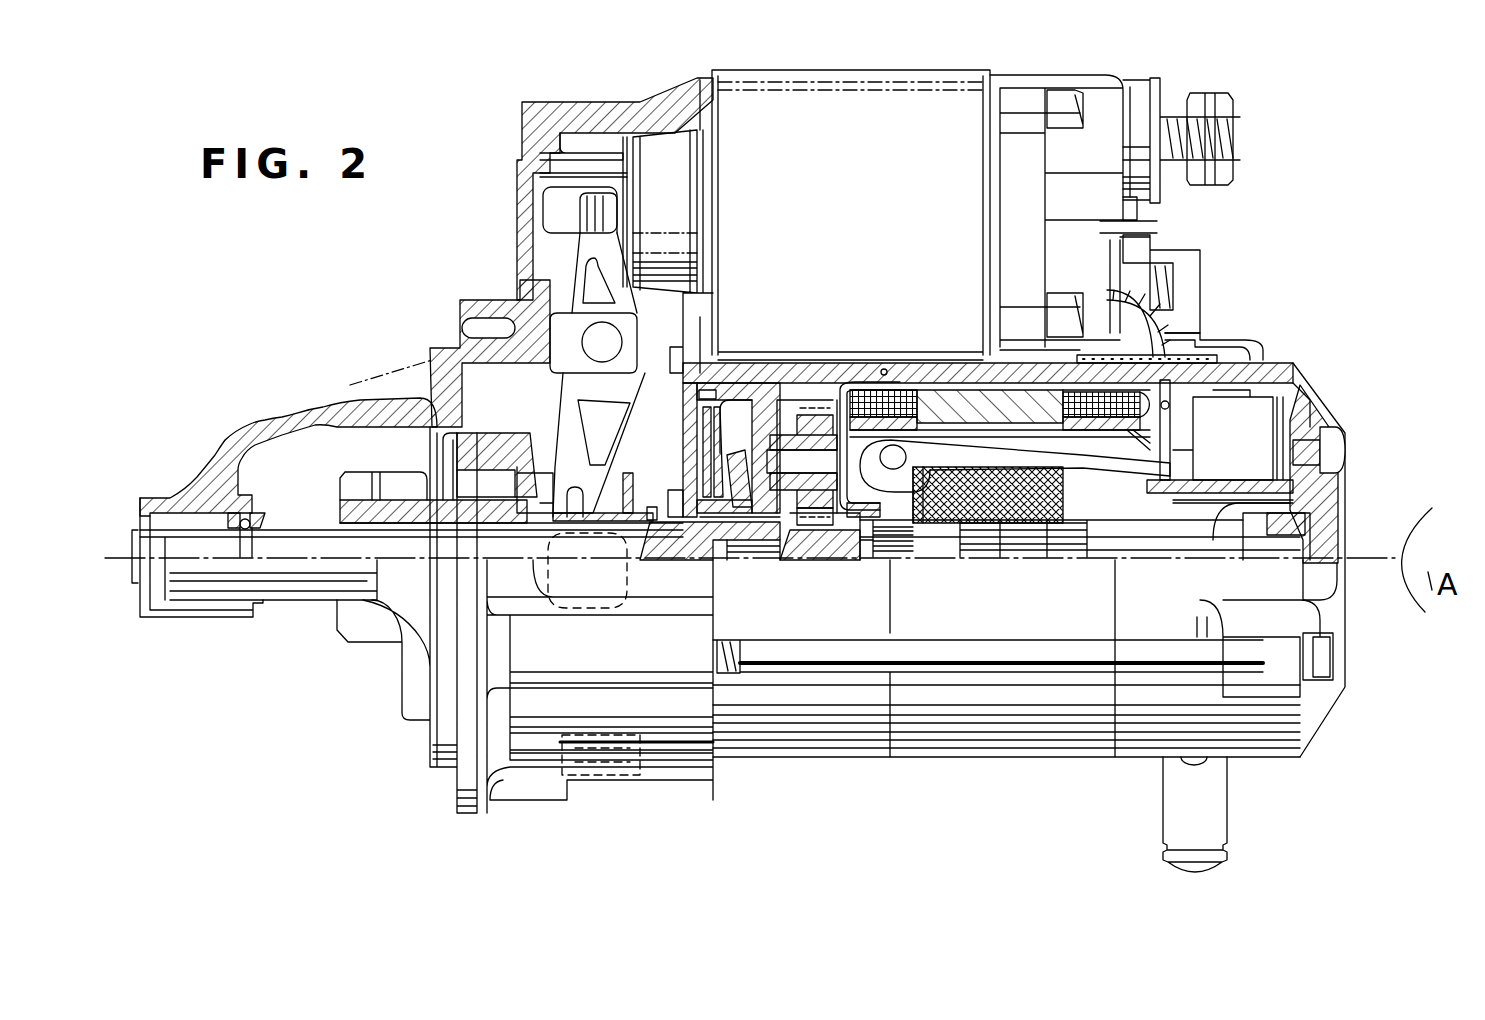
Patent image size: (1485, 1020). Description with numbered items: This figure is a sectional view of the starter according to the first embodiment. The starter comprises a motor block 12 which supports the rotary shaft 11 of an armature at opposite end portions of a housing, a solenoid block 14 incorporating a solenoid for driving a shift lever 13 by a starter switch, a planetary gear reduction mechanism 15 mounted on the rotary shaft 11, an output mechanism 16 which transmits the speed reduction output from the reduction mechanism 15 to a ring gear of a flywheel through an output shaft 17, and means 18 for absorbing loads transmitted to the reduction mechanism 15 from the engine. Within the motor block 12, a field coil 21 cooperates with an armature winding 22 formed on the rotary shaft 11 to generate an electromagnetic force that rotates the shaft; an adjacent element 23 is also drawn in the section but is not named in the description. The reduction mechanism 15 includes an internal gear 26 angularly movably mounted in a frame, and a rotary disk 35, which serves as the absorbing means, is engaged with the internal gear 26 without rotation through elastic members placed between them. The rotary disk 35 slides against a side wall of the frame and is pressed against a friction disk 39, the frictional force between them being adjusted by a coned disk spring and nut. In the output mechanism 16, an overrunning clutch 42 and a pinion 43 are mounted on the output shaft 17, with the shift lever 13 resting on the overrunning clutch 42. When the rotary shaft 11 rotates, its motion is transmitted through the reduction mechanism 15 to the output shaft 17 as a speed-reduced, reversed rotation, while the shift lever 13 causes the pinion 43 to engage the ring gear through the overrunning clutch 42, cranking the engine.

The rotary shaft 11 is at (1210, 540).
The motor block 12 is at (1300, 354).
The shift lever 13 is at (597, 228).
The solenoid block 14 is at (950, 66).
The planetary gear reduction mechanism 15 is at (866, 345).
The output mechanism 16 is at (384, 368).
The output shaft 17 is at (228, 440).
The absorbing means 18 is at (725, 345).
The field coil 21 is at (946, 390).
The armature winding 22 is at (1003, 457).
The clutch 23 is at (828, 540).
The internal gear 26 is at (773, 368).
The rotary disk 35 is at (682, 418).
The friction disk 39 is at (737, 368).
The overrunning clutch 42 is at (347, 483).
The pinion 43 is at (302, 533).